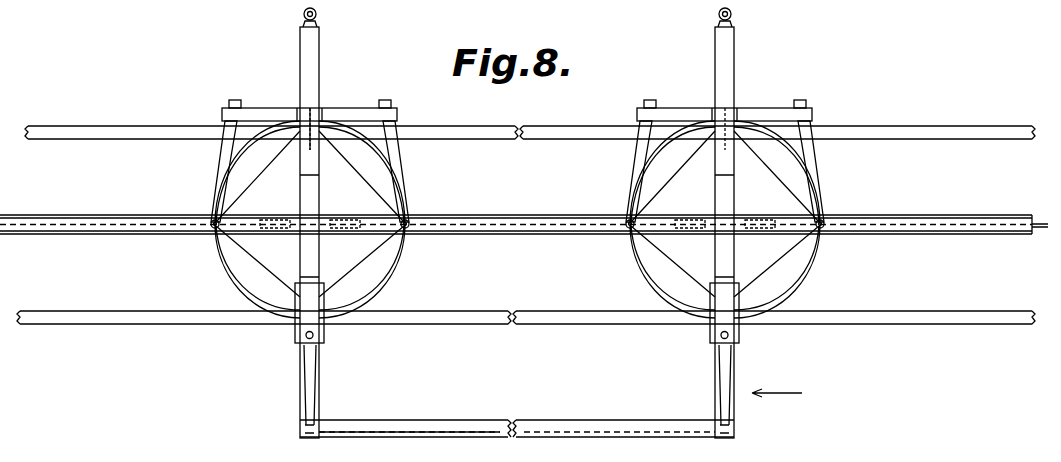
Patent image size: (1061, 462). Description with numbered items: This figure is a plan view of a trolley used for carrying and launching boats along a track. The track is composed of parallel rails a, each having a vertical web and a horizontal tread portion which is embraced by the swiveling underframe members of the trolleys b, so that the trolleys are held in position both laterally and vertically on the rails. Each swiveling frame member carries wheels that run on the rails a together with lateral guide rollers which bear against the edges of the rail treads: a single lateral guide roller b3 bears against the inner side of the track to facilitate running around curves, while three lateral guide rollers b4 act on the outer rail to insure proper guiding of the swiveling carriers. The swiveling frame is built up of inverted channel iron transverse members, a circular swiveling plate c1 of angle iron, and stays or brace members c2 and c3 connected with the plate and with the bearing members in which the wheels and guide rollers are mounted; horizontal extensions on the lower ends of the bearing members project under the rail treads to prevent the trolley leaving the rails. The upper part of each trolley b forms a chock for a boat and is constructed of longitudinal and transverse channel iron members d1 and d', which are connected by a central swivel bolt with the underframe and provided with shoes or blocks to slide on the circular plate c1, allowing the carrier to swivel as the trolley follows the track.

The rails a is at (157, 128).
The trolley b is at (551, 396).
The lateral guide roller b3 is at (304, 350).
The lateral guide rollers b4 is at (310, 107).
The circular swiveling plate c1 is at (381, 155).
The stay or brace member c2 is at (250, 262).
The stay or brace member c3 is at (393, 127).
The channel iron member d1 is at (312, 190).
The transverse channel iron member d' is at (524, 241).